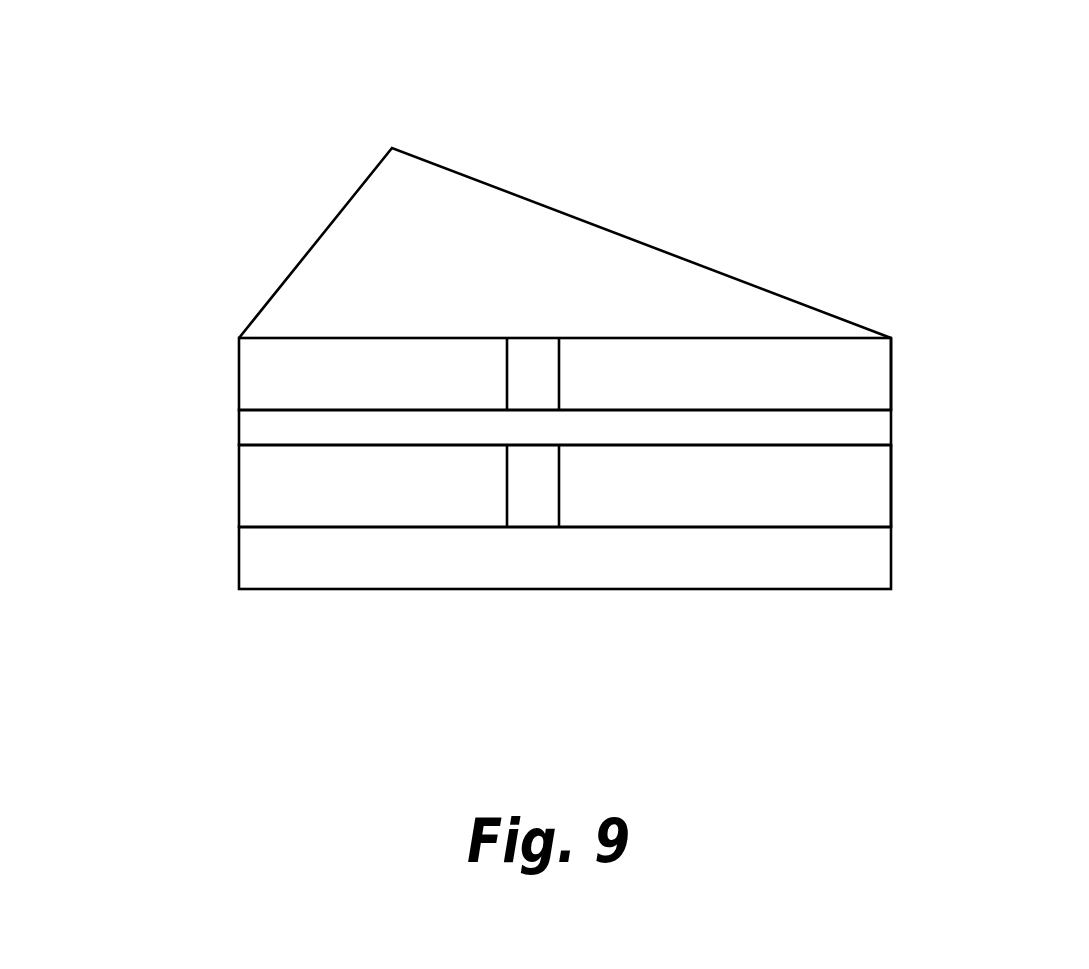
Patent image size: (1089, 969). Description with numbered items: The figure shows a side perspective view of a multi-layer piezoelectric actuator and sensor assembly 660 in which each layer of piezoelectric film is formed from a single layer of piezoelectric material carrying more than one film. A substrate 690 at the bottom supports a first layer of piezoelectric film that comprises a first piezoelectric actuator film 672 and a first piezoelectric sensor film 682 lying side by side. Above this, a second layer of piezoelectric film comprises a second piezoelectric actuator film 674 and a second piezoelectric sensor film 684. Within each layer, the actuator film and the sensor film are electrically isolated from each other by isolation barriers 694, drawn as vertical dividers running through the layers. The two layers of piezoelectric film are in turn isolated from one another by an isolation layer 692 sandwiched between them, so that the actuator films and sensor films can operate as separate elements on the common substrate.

The multi-layer piezoelectric actuator and sensor assembly 660 is at (648, 127).
The first piezoelectric actuator film 672 is at (891, 492).
The second piezoelectric actuator film 674 is at (891, 378).
The first piezoelectric sensor film 682 is at (239, 488).
The second piezoelectric sensor film 684 is at (239, 378).
The substrate 690 is at (267, 590).
The isolation layer 692 is at (891, 427).
The isolation barriers 694 is at (532, 383).